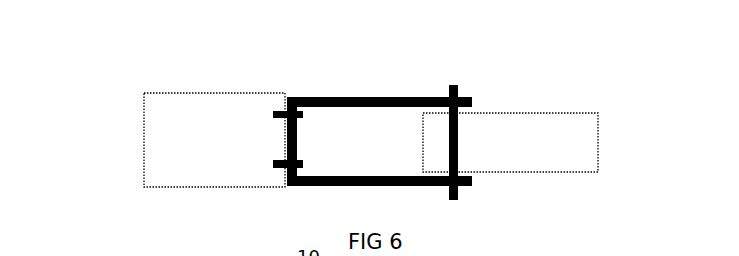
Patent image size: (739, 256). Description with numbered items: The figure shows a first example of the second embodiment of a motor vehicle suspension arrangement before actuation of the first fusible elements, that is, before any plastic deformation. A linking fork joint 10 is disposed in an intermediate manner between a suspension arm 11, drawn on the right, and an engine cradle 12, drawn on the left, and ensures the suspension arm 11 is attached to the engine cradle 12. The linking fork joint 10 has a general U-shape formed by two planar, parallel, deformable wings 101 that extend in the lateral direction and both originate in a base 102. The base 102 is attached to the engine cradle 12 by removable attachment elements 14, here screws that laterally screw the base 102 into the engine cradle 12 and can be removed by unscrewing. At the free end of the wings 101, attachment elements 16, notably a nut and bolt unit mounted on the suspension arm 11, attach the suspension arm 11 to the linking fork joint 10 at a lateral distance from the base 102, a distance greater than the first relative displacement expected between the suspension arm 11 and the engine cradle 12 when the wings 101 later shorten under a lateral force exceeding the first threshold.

The linking fork joint 10 is at (342, 82).
The wings 101 is at (390, 97).
The base 102 is at (297, 137).
The suspension arm 11 is at (556, 106).
The engine cradle 12 is at (234, 93).
The removable attachment elements 14 is at (268, 124).
The attachment elements 16 is at (467, 157).